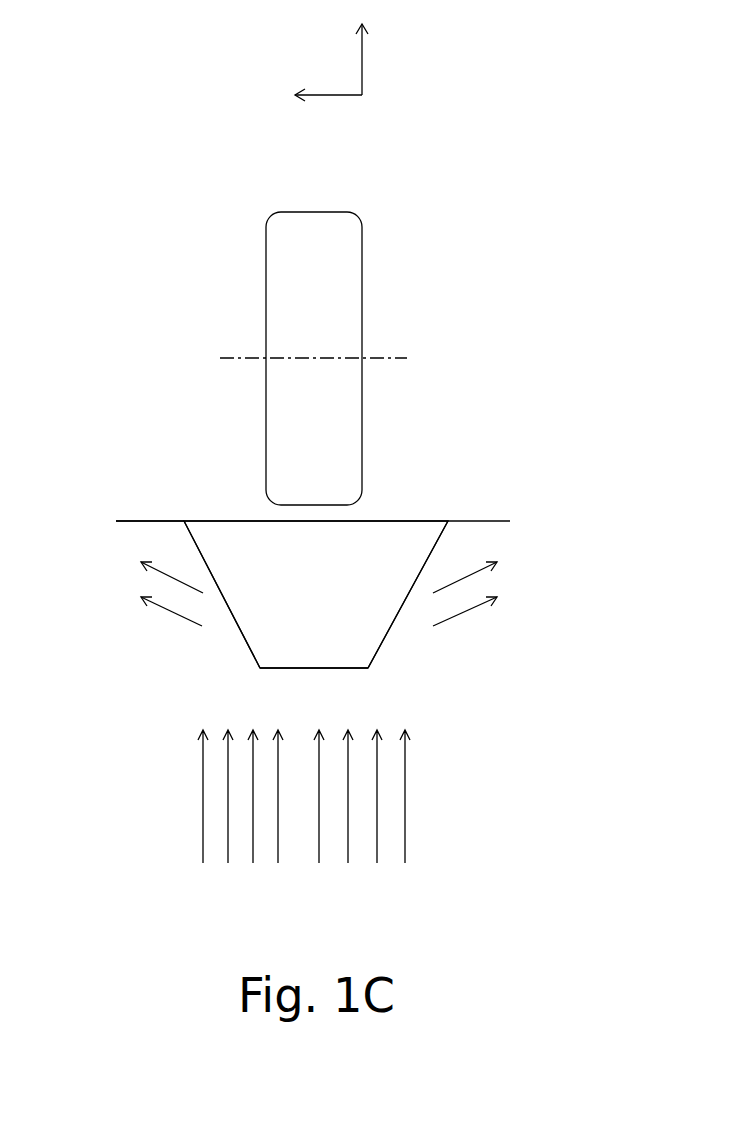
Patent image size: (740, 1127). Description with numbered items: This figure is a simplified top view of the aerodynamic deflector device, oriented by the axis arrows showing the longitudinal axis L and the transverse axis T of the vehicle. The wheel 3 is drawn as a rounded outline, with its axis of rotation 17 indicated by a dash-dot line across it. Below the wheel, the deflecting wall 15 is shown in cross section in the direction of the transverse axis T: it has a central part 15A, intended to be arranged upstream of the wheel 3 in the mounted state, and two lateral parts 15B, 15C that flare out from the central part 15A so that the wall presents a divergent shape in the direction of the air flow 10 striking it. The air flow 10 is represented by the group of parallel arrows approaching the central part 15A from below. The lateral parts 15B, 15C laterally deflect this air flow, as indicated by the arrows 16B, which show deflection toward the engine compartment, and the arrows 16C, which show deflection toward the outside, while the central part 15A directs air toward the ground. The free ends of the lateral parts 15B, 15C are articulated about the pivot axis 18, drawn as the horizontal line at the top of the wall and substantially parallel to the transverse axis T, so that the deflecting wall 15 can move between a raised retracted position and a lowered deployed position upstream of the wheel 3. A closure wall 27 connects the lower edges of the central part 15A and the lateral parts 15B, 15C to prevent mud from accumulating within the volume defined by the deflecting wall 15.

The longitudinal axis L is at (362, 64).
The transverse axis T is at (328, 95).
The wheel 3 is at (362, 270).
The axis of rotation 17 is at (233, 358).
The pivot axis 18 is at (493, 521).
The closure wall 27 is at (233, 521).
The deflecting wall 15 is at (92, 725).
The central part 15A is at (315, 668).
The lateral part 15B is at (243, 637).
The lateral part 15C is at (388, 632).
The arrows 16B is at (170, 612).
The arrows 16C is at (465, 615).
The air flow 10 is at (203, 805).